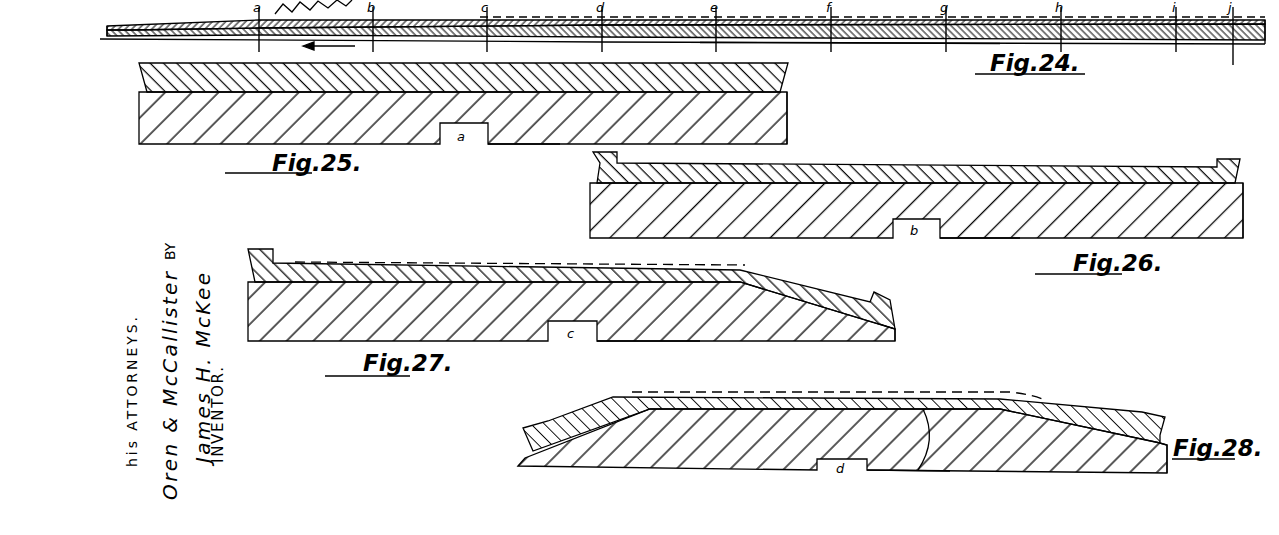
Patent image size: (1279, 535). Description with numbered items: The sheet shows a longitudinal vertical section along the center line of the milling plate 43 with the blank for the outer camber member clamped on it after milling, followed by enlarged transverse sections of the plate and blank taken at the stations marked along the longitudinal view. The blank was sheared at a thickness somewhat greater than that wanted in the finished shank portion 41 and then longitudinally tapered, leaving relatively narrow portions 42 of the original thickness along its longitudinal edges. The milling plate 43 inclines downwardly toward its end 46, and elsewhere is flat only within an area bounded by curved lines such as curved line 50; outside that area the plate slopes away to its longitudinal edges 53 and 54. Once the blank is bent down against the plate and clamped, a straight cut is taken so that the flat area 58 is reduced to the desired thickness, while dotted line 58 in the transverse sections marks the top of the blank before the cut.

In FIG. 24, the shank portion 41 is at (1262, 28).
In FIG. 26, the relatively narrow portions 42 is at (596, 156).
In FIG. 27, the relatively narrow portions 42 is at (255, 263).
In FIG. 28, the relatively narrow portions 42 is at (533, 433).
In FIG. 24, the milling plate 43 is at (878, 35).
In FIG. 25, the milling plate 43 is at (513, 134).
In FIG. 26, the milling plate 43 is at (1003, 227).
In FIG. 27, the milling plate 43 is at (672, 333).
In FIG. 28, the milling plate 43 is at (703, 462).
In FIG. 24, the end 46 is at (102, 34).
In FIG. 28, the curved line 50 is at (918, 470).
In FIG. 25, the longitudinal edge 53 is at (139, 106).
In FIG. 26, the longitudinal edge 53 is at (590, 198).
In FIG. 27, the longitudinal edge 53 is at (248, 306).
In FIG. 28, the longitudinal edge 53 is at (518, 466).
In FIG. 25, the longitudinal edge 54 is at (789, 113).
In FIG. 26, the longitudinal edge 54 is at (1244, 230).
In FIG. 27, the longitudinal edge 54 is at (897, 338).
In FIG. 28, the longitudinal edge 54 is at (1167, 468).
In FIG. 27, the flat area 58 is at (495, 260).
In FIG. 28, the flat area 58 is at (812, 392).